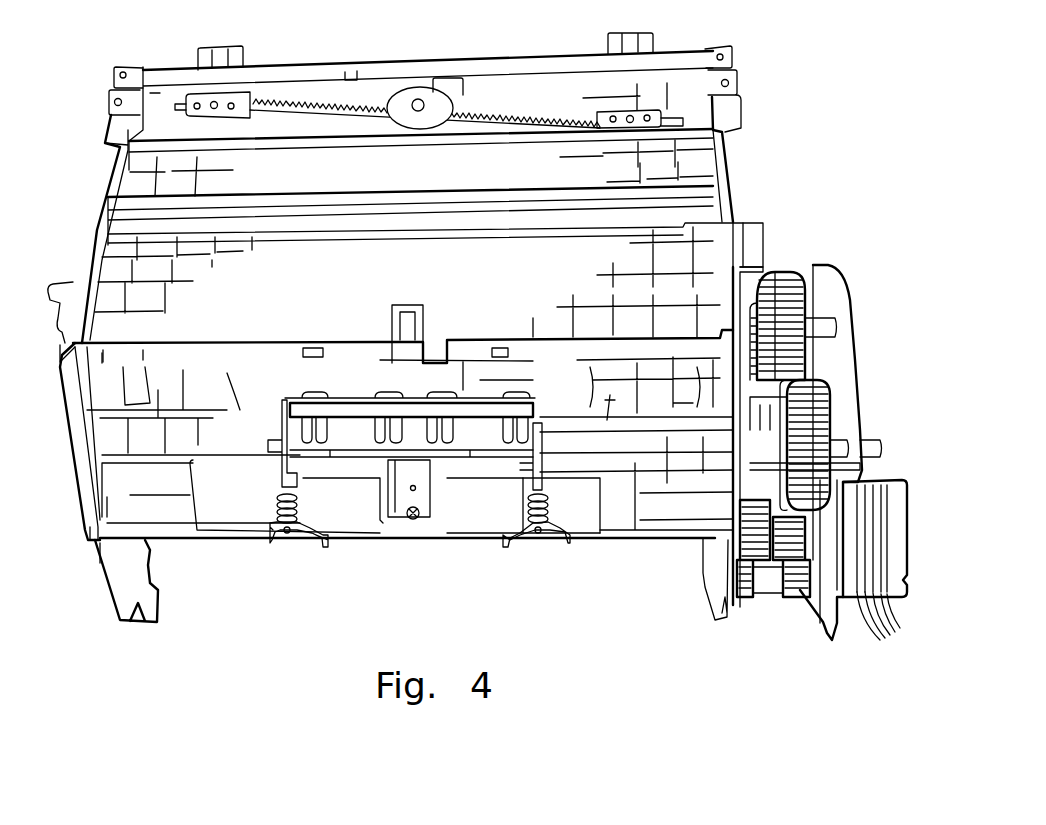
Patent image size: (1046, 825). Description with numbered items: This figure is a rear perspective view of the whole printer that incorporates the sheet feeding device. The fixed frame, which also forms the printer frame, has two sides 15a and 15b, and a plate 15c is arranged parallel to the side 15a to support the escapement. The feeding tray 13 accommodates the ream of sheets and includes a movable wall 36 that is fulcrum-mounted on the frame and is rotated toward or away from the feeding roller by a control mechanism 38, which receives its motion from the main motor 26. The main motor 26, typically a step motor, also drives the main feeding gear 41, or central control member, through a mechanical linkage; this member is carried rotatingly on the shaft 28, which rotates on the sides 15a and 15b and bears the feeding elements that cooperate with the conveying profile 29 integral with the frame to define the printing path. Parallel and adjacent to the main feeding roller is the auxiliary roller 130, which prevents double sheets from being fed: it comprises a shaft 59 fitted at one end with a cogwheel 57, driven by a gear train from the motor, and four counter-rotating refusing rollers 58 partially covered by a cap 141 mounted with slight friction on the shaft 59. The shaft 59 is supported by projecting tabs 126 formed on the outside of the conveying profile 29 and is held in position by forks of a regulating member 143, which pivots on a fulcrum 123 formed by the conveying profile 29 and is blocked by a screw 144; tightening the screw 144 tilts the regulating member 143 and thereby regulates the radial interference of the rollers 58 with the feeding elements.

The feeding tray 13 is at (115, 278).
The side 15a is at (738, 208).
The side 15b is at (147, 568).
The plate 15c is at (855, 325).
The main motor 26 is at (843, 595).
The shaft 28 is at (868, 445).
The conveying profile 29 is at (647, 528).
The movable wall 36 is at (491, 289).
The control mechanism 38 is at (787, 277).
The main feeding gear 41 is at (798, 408).
The cogwheel 57 is at (757, 440).
The counter-rotating rollers 58 is at (518, 422).
The shaft 59 is at (620, 396).
The fulcrum 123 is at (285, 480).
The projecting tabs 126 is at (287, 427).
The auxiliary roller 130 is at (476, 465).
The cap 141 is at (307, 398).
The regulating member 143 is at (380, 495).
The screw 144 is at (417, 518).